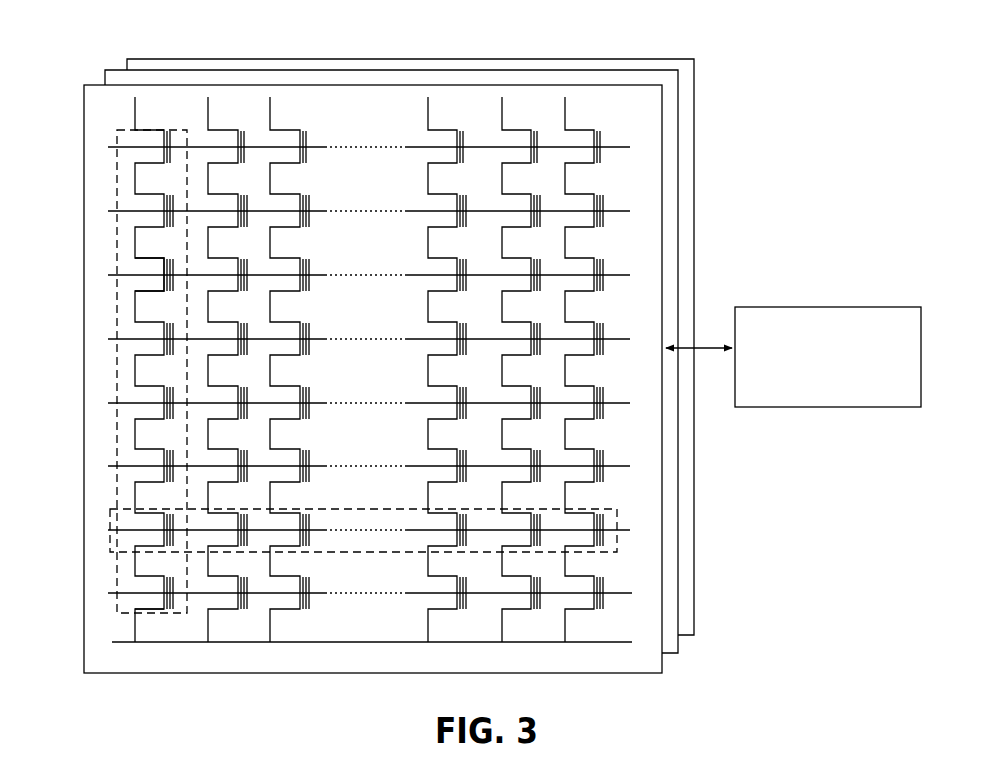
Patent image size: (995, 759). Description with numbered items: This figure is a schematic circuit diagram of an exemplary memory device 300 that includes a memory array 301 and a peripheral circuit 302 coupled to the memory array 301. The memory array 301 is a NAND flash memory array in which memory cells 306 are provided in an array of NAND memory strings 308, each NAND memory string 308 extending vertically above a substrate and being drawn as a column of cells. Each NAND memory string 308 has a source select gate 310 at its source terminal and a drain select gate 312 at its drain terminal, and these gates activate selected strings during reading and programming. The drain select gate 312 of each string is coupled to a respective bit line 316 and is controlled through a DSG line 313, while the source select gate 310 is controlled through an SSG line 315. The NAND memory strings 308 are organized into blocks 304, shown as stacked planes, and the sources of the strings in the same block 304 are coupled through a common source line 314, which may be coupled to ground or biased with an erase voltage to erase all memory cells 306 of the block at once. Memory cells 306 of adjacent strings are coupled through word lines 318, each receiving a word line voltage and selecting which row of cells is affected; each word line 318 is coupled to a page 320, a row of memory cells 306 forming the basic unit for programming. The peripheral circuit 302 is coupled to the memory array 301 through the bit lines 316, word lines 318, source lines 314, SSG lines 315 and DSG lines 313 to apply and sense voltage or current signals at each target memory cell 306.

The memory device 300 is at (122, 53).
The memory array 301 is at (408, 344).
The peripheral circuit 302 is at (898, 307).
The block 304 is at (565, 85).
The memory cell 306 is at (162, 249).
The NAND memory string 308 is at (118, 186).
The source select gate 310 is at (159, 616).
The drain select gate 312 is at (163, 125).
The DSG line 313 is at (603, 147).
The source line 314 is at (225, 642).
The SSG line 315 is at (603, 592).
The bit line 316 is at (136, 108).
The word line 318 is at (318, 464).
The page 320 is at (318, 508).